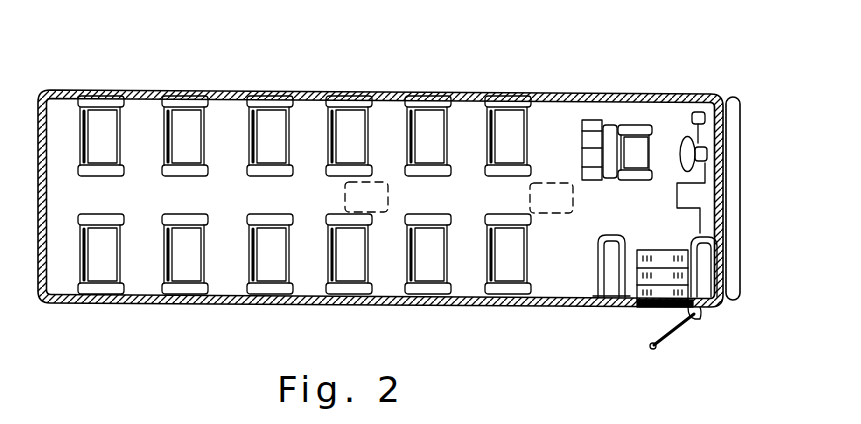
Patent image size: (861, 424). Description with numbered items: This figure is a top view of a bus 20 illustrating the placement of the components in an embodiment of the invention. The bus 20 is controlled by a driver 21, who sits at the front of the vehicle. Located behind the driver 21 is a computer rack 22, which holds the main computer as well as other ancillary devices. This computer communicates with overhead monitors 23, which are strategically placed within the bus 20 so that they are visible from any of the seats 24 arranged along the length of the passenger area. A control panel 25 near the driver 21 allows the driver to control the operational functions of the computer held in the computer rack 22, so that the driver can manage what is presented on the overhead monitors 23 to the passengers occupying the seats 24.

The bus 20 is at (740, 198).
The driver 21 is at (657, 132).
The computer rack 22 is at (582, 131).
The overhead monitors 23 is at (550, 182).
The seats 24 is at (237, 96).
The control panel 25 is at (720, 100).